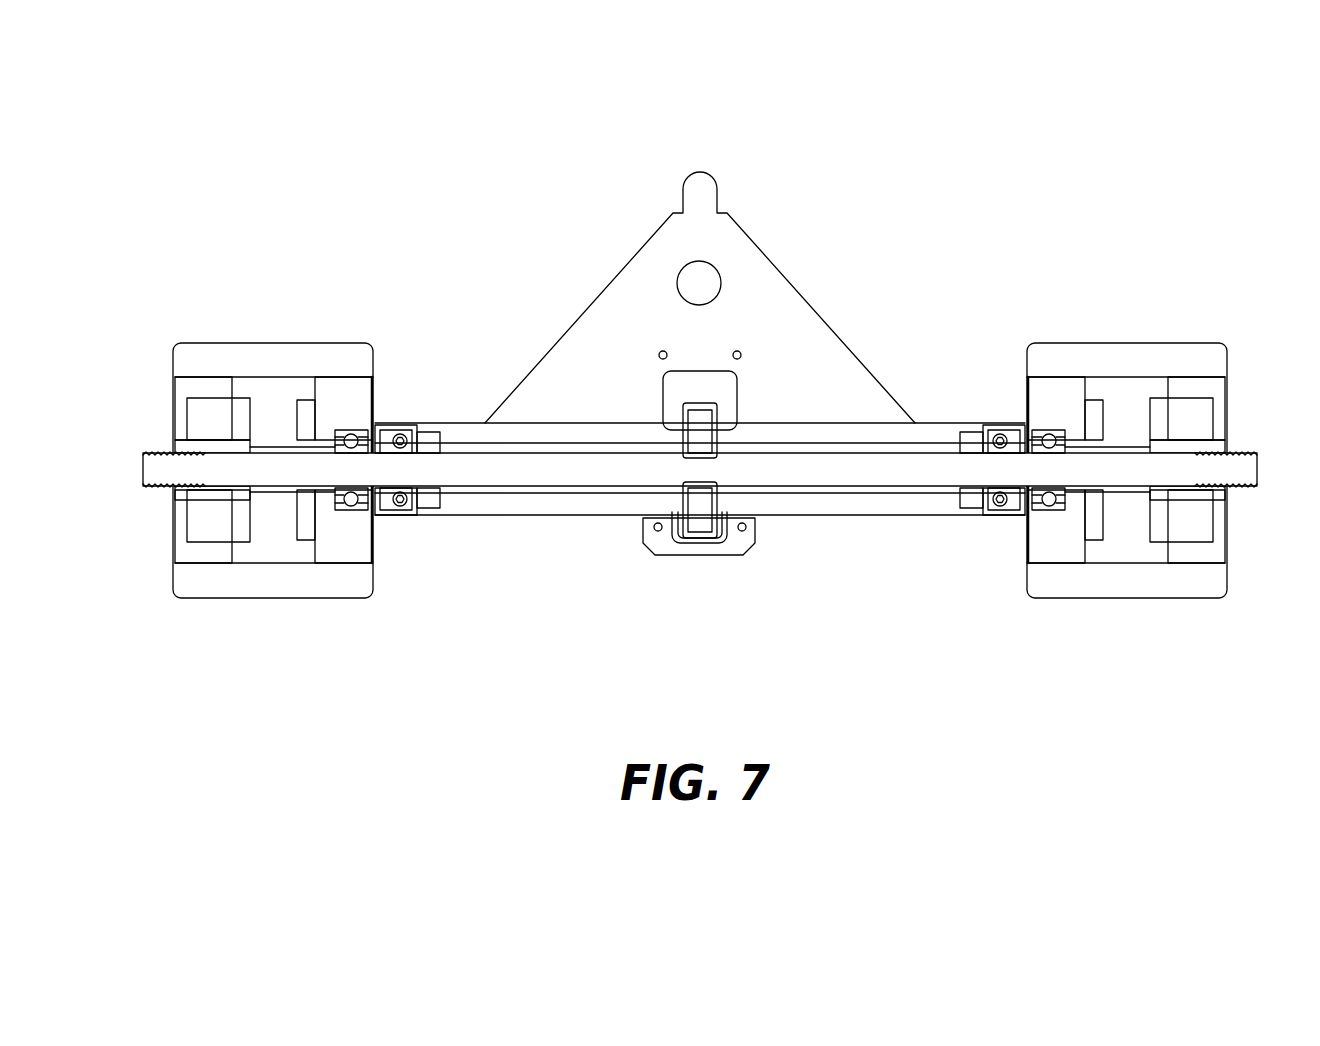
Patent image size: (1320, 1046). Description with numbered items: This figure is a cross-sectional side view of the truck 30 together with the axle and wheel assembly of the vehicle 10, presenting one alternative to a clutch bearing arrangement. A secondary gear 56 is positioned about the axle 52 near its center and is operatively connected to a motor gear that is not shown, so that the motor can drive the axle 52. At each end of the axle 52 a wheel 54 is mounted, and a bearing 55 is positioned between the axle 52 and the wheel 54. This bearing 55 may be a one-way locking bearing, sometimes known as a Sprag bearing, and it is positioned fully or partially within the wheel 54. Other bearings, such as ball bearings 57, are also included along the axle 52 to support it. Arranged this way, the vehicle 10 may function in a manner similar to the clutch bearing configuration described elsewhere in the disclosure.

The vehicle 10 is at (700, 391).
The truck 30 is at (874, 303).
The axle 52 is at (770, 473).
The wheel 54 is at (333, 355).
The bearing 55 is at (340, 432).
The secondary gear 56 is at (702, 502).
The ball bearings 57 is at (410, 432).